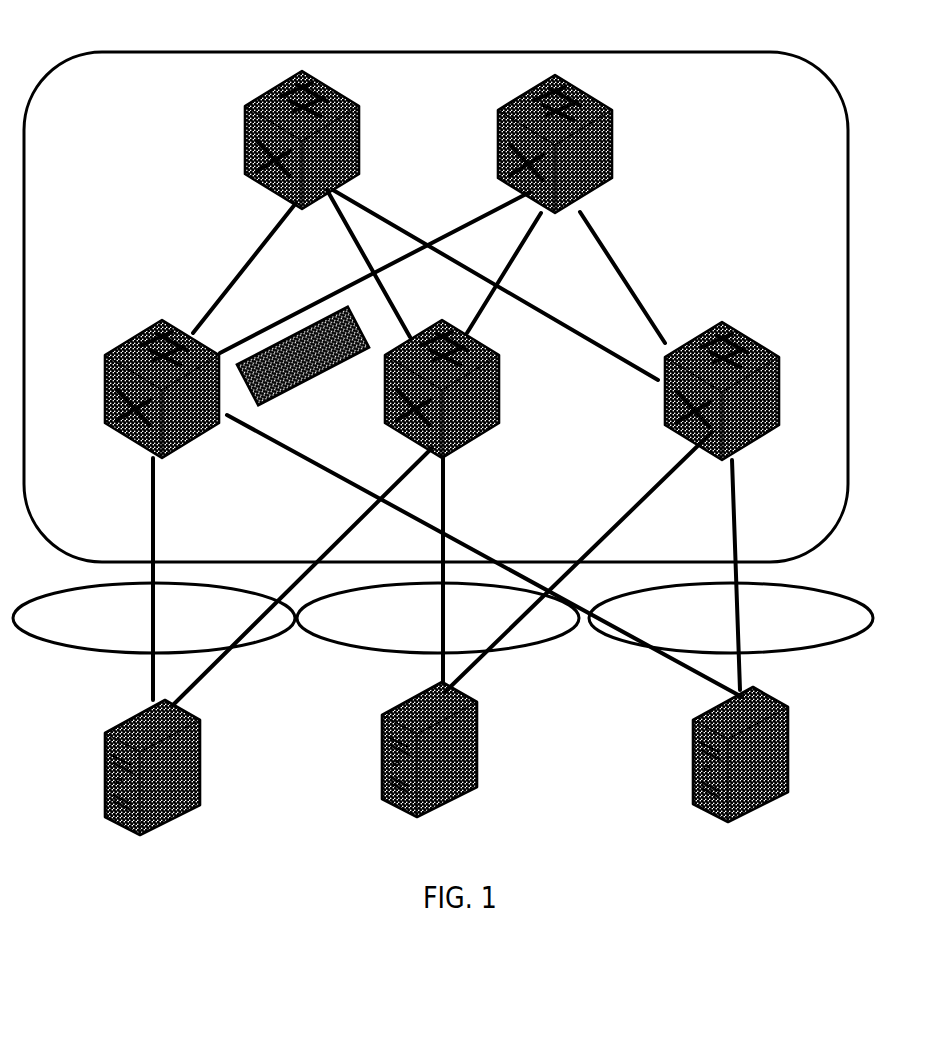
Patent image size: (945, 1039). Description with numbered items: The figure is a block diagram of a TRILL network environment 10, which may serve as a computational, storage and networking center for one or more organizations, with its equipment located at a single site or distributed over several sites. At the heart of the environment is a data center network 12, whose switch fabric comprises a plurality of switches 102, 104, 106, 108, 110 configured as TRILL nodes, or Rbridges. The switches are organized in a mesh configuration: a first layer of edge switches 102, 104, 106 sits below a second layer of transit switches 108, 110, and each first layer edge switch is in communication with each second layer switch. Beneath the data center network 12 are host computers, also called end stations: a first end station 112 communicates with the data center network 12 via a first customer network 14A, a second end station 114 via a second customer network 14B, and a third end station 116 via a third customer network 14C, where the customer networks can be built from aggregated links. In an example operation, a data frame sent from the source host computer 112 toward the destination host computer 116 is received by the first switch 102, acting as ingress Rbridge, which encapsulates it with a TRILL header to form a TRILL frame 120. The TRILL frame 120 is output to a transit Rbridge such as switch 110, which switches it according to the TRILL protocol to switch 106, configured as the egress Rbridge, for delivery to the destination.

The TRILL network environment 10 is at (897, 62).
The data center network 12 is at (774, 131).
The first customer network 14A is at (160, 634).
The second customer network 14B is at (443, 634).
The third customer network 14C is at (748, 634).
The first switch 102 is at (115, 438).
The switch 104 is at (487, 438).
The switch 106 is at (782, 437).
The switch 108 is at (363, 132).
The switch 110 is at (625, 120).
The first end station 112 is at (207, 743).
The second end station 114 is at (488, 733).
The third end station 116 is at (792, 720).
The TRILL frame 120 is at (303, 356).